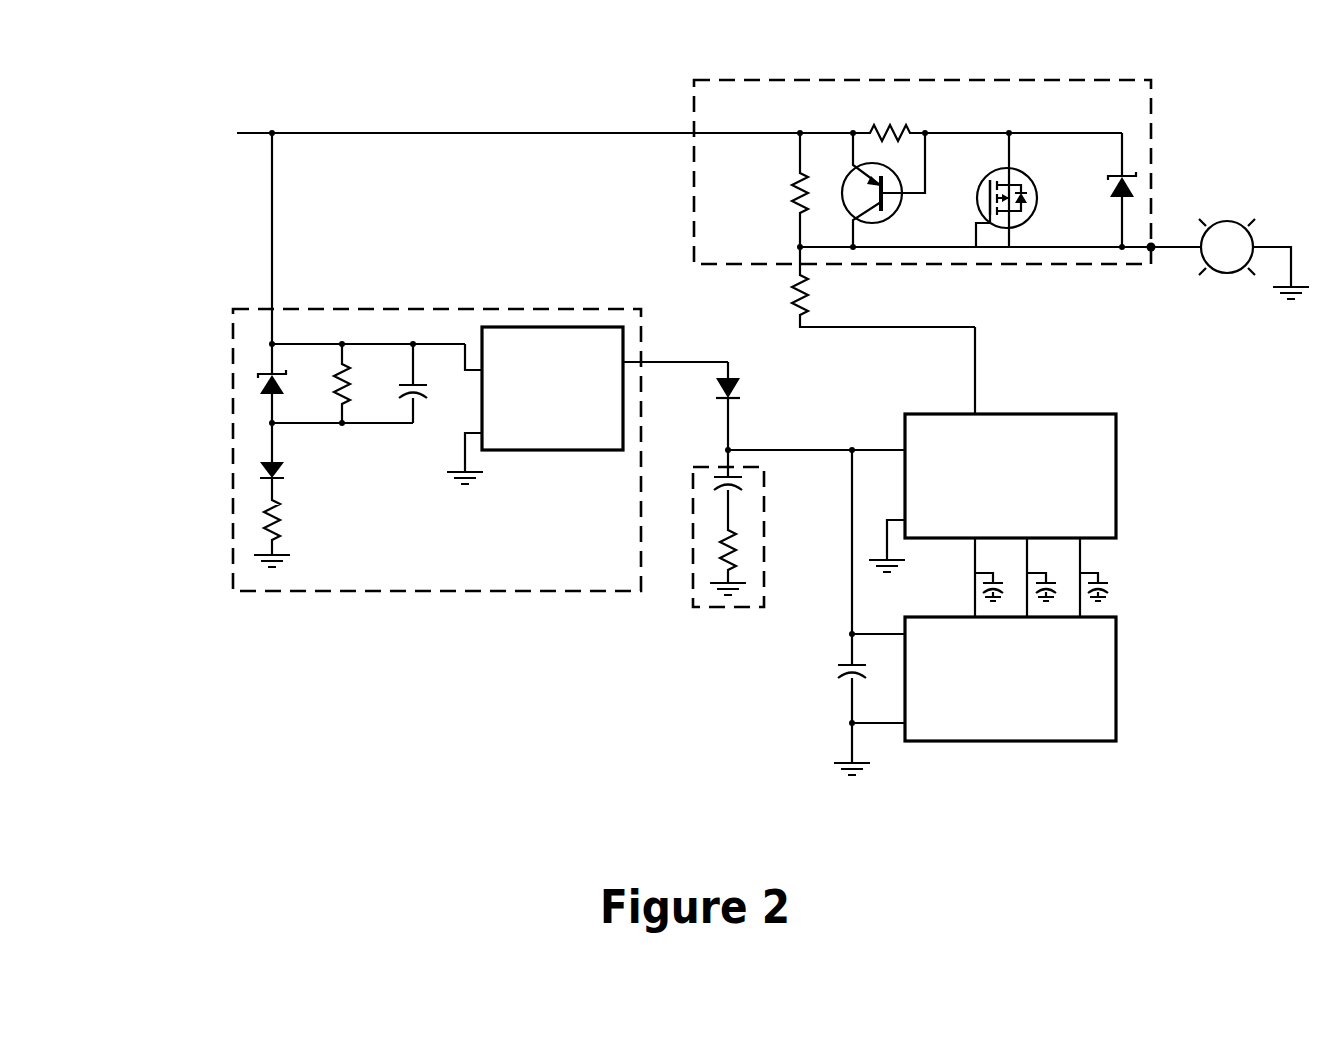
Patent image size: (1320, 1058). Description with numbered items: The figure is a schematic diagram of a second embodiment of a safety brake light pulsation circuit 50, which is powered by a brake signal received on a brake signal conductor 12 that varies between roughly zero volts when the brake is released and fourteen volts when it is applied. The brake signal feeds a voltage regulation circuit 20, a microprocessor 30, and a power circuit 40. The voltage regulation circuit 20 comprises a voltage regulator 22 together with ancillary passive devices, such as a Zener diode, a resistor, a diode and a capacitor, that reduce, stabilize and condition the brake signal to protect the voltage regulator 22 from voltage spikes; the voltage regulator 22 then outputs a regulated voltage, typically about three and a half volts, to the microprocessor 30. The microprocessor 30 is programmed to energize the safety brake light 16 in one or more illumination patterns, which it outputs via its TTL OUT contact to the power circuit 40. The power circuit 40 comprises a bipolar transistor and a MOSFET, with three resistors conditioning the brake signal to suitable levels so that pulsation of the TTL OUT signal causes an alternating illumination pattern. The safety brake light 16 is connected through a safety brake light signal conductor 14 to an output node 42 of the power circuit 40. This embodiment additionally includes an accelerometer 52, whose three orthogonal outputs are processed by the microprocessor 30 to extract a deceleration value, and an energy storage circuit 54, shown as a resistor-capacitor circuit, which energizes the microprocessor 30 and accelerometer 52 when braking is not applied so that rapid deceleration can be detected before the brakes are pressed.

The brake signal conductor 12 is at (246, 133).
The safety brake light signal conductor 14 is at (1171, 245).
The safety brake light 16 is at (1233, 219).
The voltage regulation circuit 20 is at (355, 309).
The voltage regulator 22 is at (527, 327).
The microprocessor 30 is at (1117, 477).
The power circuit 40 is at (910, 80).
The output node 42 is at (1153, 250).
The safety brake light pulsation circuit 50 is at (203, 57).
The accelerometer 52 is at (1117, 682).
The energy storage circuit 54 is at (766, 538).